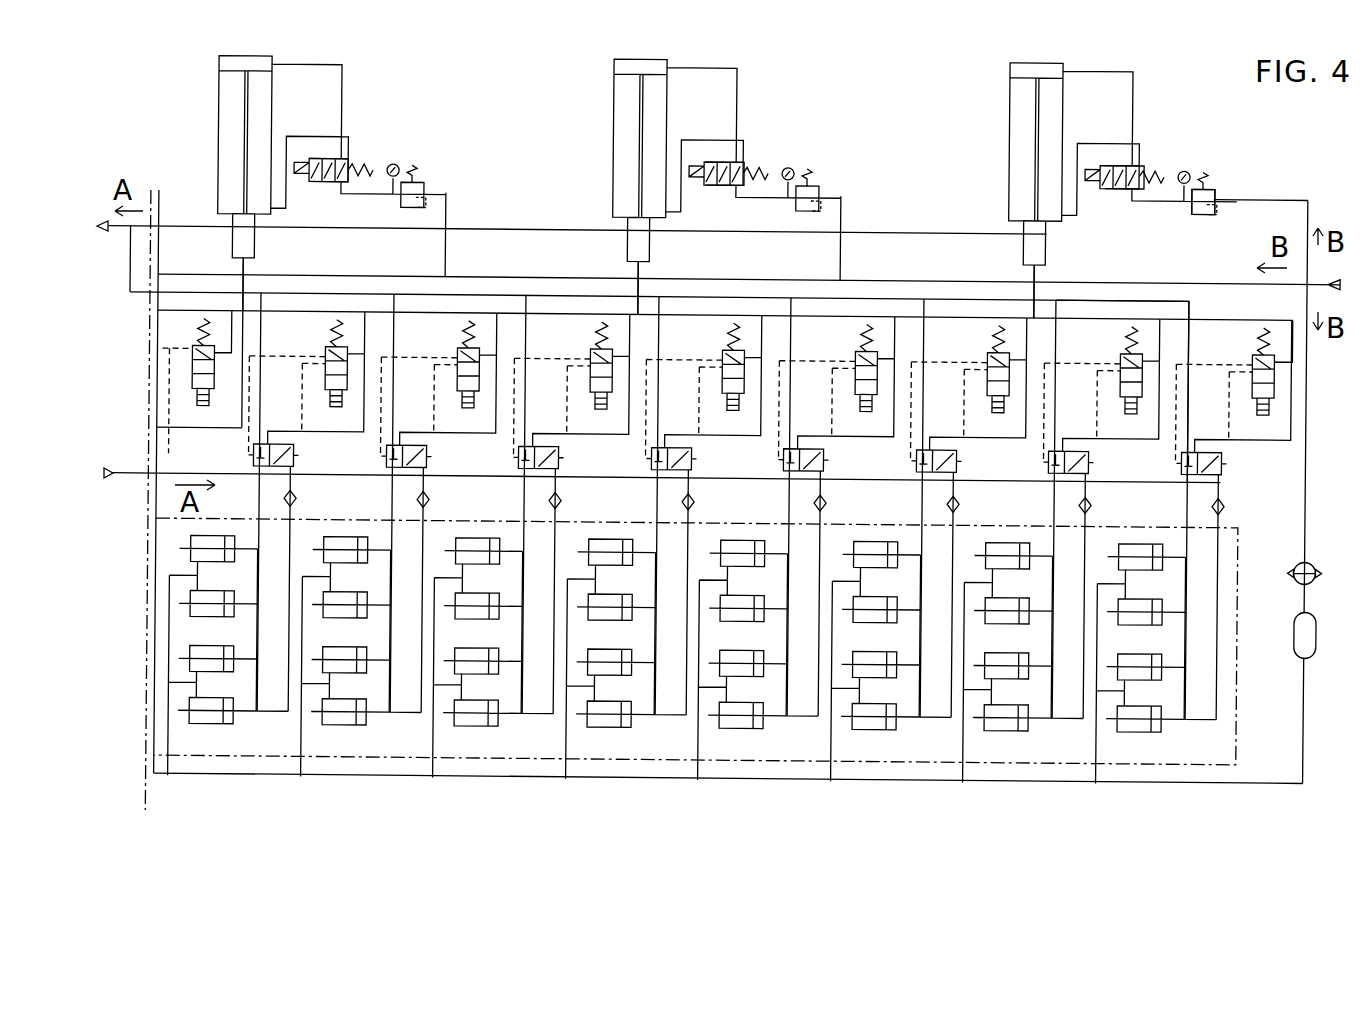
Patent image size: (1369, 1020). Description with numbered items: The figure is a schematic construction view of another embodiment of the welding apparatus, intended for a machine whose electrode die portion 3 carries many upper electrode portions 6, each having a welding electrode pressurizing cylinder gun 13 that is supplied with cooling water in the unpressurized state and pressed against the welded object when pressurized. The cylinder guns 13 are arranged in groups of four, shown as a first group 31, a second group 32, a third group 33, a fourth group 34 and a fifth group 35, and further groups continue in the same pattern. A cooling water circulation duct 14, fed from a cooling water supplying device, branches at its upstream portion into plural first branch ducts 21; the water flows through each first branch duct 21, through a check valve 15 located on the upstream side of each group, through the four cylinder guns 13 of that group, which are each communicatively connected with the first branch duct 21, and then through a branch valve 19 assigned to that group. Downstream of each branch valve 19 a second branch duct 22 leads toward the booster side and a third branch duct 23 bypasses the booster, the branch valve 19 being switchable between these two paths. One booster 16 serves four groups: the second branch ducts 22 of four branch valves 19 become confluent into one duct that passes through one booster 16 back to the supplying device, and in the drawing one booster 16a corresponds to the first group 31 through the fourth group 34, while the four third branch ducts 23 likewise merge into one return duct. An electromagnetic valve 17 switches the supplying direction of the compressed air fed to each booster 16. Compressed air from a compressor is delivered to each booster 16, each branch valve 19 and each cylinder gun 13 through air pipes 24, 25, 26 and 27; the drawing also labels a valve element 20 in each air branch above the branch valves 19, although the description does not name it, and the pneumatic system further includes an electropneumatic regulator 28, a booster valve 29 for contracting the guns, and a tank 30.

The electrode die portion 3 is at (1243, 730).
The upper electrode portion 6 is at (714, 649).
The cylinder gun 13 is at (361, 656).
The cooling water circulation duct 14 is at (129, 486).
The check valve 15 is at (576, 506).
The booster 16 is at (708, 246).
The booster 16a is at (984, 126).
The electromagnetic valve 17 is at (363, 144).
The branch valve 19 is at (554, 434).
The pressure control valve 20 is at (588, 323).
The first branch duct 21 is at (1222, 672).
The second branch duct 22 is at (944, 445).
The third branch duct 23 is at (922, 332).
The air pipe 24 is at (1278, 193).
The air pipe 25 is at (1236, 283).
The air pipe 26 is at (1208, 312).
The air pipe 27 is at (1308, 512).
The electropneumatic regulator 28 is at (1225, 168).
The booster valve for contracting guns 29 is at (1320, 585).
The tank 30 is at (1323, 658).
The first group 31 is at (1184, 742).
The second group 32 is at (1046, 749).
The third group 33 is at (906, 749).
The fourth group 34 is at (754, 749).
The fifth group 35 is at (613, 749).